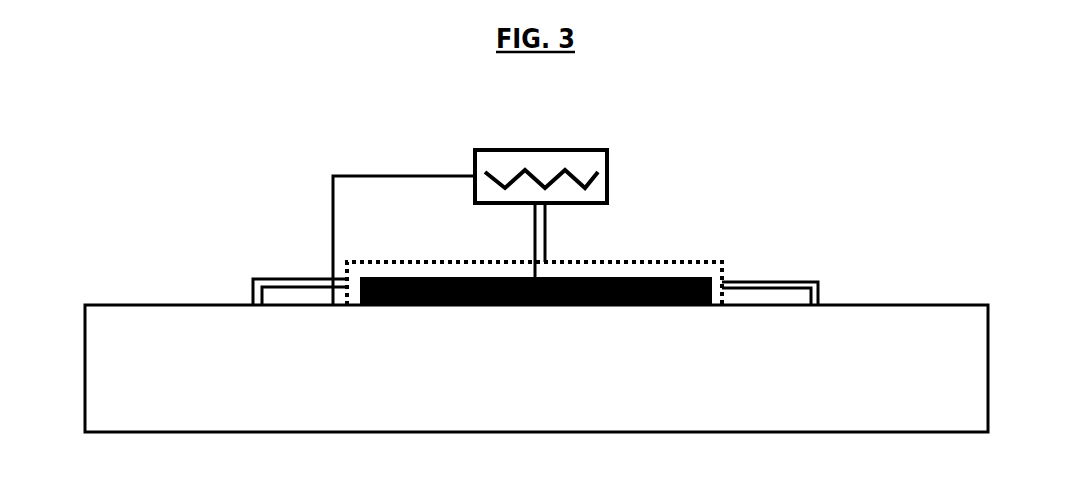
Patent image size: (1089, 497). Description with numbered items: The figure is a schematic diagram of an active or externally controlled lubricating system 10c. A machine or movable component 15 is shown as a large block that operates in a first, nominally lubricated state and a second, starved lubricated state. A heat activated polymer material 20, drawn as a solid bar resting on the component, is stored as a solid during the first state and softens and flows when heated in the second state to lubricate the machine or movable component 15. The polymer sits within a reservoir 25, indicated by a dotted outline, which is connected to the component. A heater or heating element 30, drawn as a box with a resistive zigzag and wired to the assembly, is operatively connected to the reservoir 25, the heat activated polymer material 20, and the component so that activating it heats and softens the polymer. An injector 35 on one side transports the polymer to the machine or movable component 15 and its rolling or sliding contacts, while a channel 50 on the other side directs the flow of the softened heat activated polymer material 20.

The lubricating system 10c is at (47, 268).
The machine or movable component 15 is at (990, 373).
The heat activated polymer material 20 is at (664, 277).
The reservoir 25 is at (688, 260).
The heater or heating element 30 is at (580, 150).
The injector 35 is at (280, 278).
The channel 50 is at (794, 280).